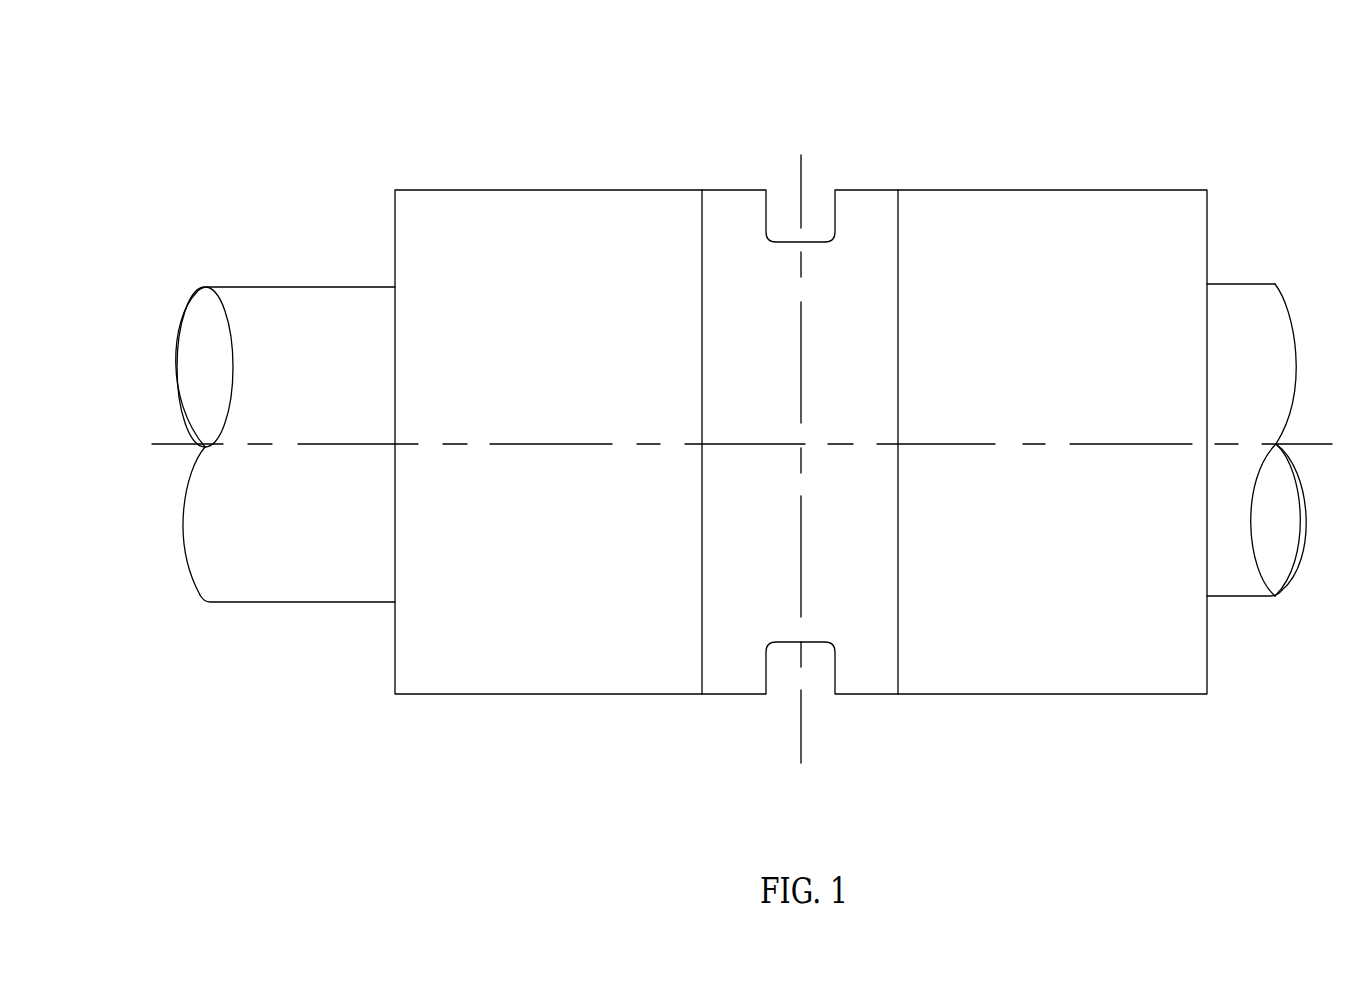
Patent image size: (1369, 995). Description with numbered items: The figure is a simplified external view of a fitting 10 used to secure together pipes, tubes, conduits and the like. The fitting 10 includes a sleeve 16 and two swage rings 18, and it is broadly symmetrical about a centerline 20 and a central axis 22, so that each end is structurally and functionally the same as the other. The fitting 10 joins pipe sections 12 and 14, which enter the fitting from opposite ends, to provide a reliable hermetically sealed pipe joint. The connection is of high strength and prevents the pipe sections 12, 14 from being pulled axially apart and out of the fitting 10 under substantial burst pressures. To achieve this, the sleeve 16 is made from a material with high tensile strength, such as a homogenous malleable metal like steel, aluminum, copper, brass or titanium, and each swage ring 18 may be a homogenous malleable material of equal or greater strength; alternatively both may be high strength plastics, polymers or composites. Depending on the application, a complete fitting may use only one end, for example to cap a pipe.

The fitting 10 is at (958, 102).
The pipe section 12 is at (303, 287).
The pipe section 14 is at (1253, 284).
The sleeve 16 is at (734, 190).
The swage ring 18 is at (560, 190).
The centerline 20 is at (804, 724).
The central axis 22 is at (1326, 441).